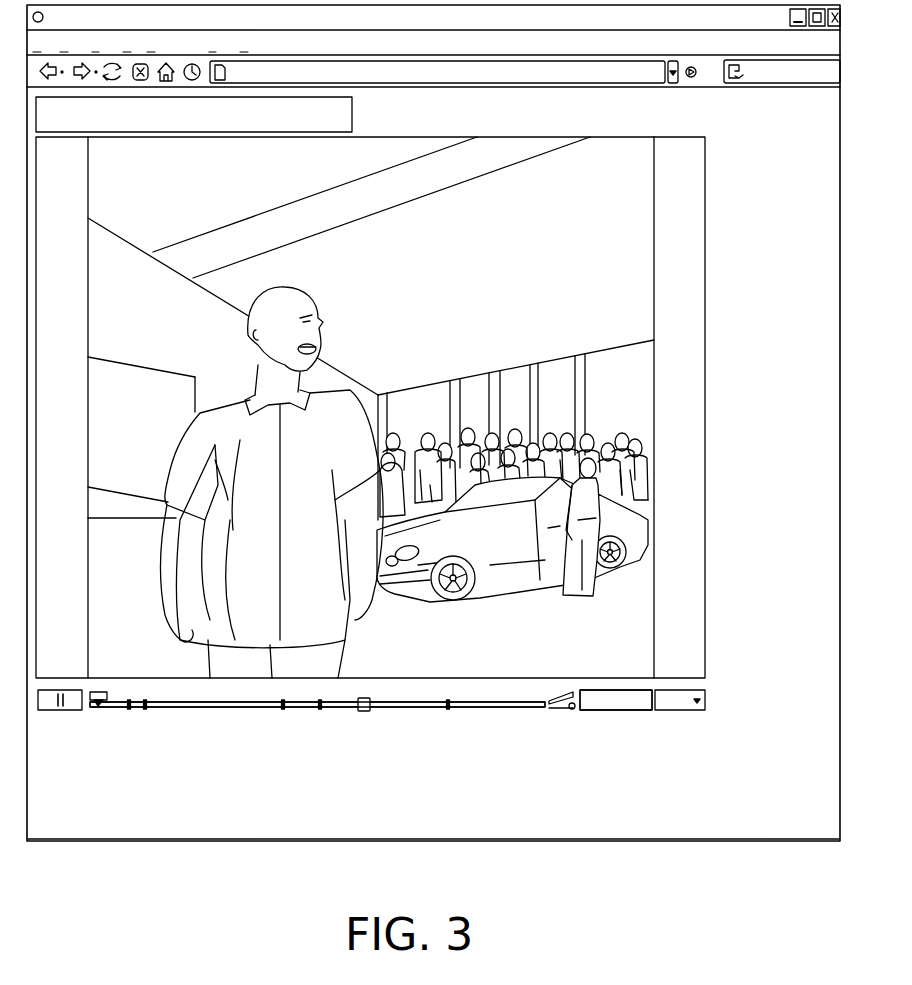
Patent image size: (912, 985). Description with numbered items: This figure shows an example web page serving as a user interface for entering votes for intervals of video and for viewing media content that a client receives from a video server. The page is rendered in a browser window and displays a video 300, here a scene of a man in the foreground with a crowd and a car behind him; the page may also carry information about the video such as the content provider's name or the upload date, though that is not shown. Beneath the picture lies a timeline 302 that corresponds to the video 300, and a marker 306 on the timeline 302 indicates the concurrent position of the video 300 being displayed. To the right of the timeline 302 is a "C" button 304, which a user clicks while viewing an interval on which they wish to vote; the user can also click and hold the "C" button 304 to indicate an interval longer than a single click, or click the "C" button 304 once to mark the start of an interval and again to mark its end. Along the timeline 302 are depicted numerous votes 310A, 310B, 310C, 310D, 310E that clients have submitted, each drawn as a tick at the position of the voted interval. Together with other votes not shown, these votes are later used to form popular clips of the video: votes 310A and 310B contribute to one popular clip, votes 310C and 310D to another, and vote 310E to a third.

The video 300 is at (705, 528).
The timeline 302 is at (545, 708).
The "C" button 304 is at (612, 710).
The marker 306 is at (98, 706).
The vote 310A is at (129, 709).
The vote 310B is at (145, 709).
The vote 310C is at (283, 709).
The vote 310D is at (320, 709).
The vote 310E is at (448, 709).